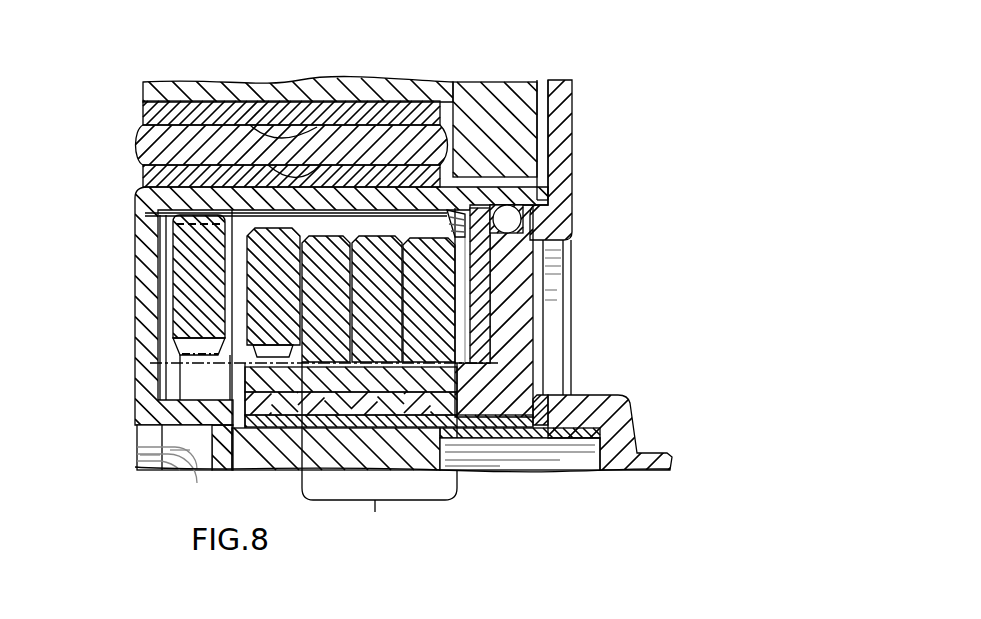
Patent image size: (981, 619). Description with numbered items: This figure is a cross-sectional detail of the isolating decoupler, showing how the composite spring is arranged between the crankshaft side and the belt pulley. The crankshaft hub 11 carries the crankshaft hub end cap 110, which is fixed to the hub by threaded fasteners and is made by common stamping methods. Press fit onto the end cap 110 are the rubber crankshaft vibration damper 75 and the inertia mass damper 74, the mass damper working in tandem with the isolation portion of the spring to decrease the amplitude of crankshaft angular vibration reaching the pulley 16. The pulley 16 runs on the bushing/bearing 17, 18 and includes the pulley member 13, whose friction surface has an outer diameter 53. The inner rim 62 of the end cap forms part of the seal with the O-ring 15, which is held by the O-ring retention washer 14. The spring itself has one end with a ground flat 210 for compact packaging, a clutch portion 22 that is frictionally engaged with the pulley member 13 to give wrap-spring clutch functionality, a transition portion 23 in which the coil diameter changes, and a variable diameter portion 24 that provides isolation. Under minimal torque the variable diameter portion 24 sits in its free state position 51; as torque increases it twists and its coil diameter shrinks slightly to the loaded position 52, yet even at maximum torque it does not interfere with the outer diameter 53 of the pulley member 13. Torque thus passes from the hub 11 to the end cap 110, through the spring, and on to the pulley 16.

The hub 11 is at (620, 427).
The pulley member 13 is at (257, 383).
The O-ring retention washer 14 is at (483, 307).
The O-ring 15 is at (507, 220).
The pulley 16 is at (560, 228).
The bushing/bearing 17 is at (488, 420).
The bushing/bearing 18 is at (547, 413).
The clutch portion 22 is at (305, 290).
The transition portion 23 is at (263, 230).
The variable diameter portion 24 is at (193, 230).
The free state position 51 is at (160, 217).
The loaded position 52 is at (173, 347).
The outer diameter 53 is at (150, 363).
The inner rim 62 is at (515, 192).
The inertia mass damper 74 is at (517, 97).
The rubber crankshaft vibration damper 75 is at (160, 148).
The crankshaft hub end cap 110 is at (145, 395).
The ground flat 210 is at (457, 257).